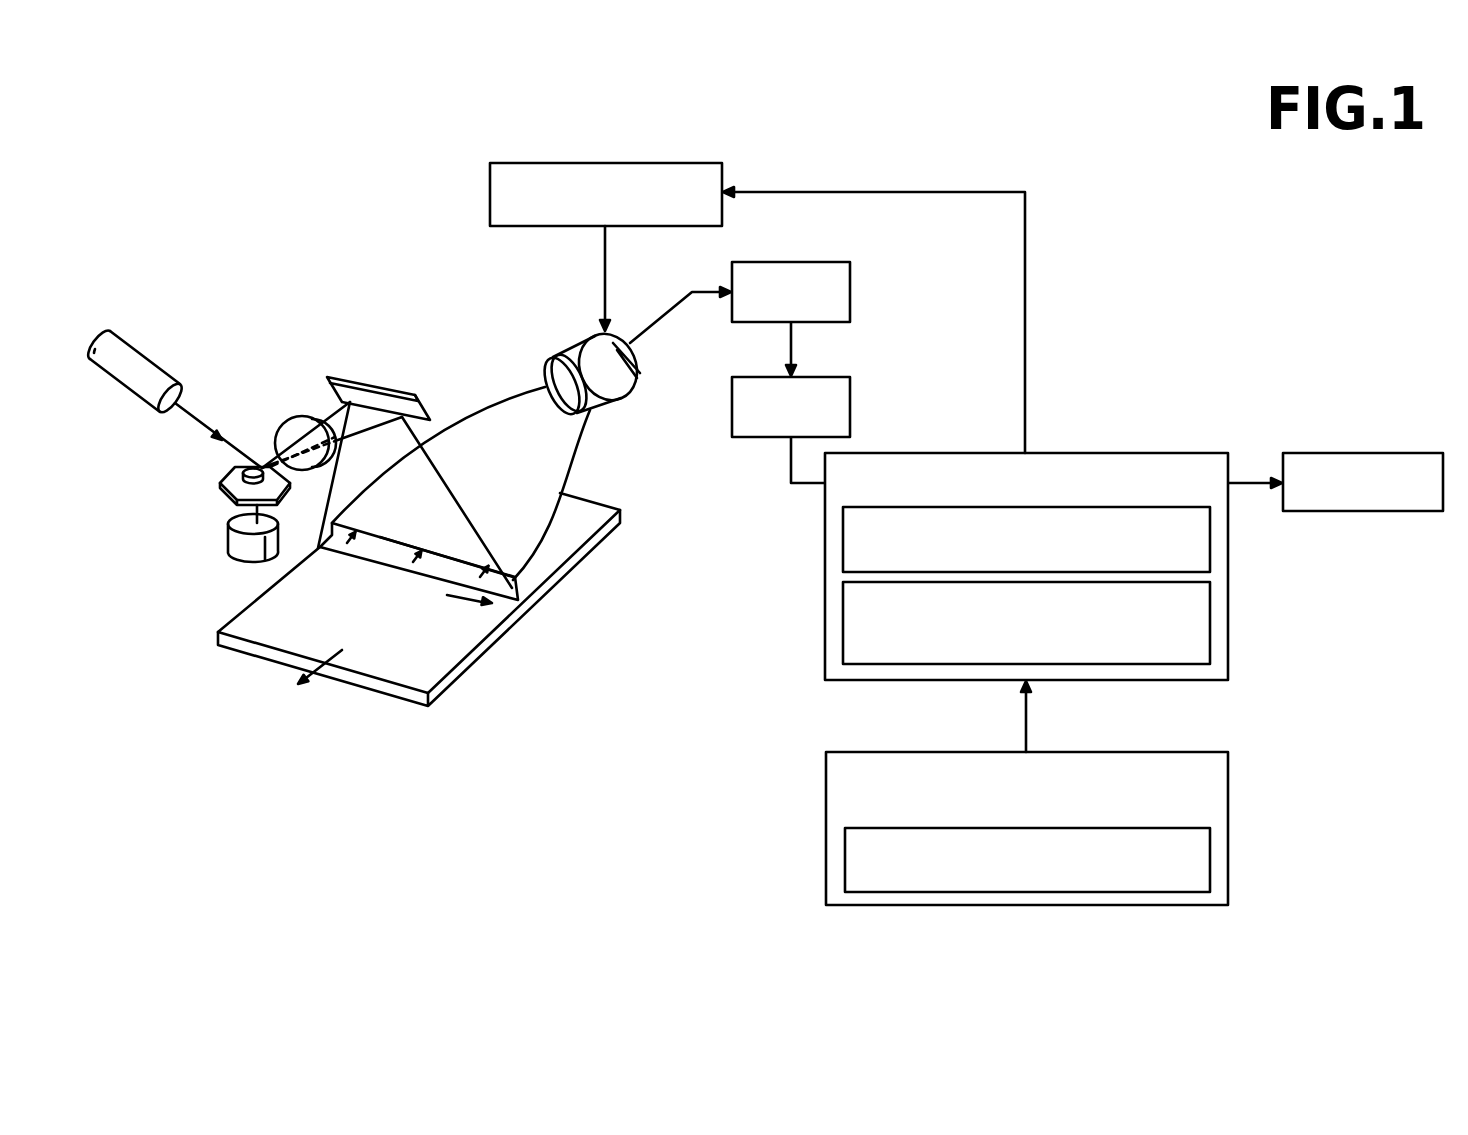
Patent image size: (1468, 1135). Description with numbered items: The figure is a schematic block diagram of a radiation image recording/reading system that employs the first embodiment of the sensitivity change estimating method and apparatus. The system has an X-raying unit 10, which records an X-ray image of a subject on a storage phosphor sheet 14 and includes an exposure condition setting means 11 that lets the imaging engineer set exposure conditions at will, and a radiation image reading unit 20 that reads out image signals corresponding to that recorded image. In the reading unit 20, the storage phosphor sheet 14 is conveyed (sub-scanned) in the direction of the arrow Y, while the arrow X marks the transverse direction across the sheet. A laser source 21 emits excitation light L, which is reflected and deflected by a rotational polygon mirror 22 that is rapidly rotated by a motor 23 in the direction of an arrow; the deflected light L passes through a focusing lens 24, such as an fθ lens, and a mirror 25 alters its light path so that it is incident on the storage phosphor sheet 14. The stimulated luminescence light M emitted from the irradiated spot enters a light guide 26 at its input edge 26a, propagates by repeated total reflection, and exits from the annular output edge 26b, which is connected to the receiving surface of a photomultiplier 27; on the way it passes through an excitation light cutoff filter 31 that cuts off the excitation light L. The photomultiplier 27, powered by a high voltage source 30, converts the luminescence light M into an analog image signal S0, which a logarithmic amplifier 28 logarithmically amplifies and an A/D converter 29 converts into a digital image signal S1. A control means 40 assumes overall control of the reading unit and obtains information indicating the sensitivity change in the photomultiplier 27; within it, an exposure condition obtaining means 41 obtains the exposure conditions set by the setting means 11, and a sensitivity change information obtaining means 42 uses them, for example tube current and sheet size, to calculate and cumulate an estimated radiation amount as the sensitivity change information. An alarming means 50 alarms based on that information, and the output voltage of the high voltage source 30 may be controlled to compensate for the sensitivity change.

The X-raying unit 10 is at (1053, 793).
The exposure condition setting means 11 is at (1211, 853).
The storage phosphor sheet 14 is at (445, 666).
The radiation image reading unit 20 is at (340, 318).
The laser source 21 is at (140, 368).
The rotational polygon mirror 22 is at (222, 474).
The motor 23 is at (229, 540).
The focusing lens 24 is at (293, 417).
The mirror 25 is at (407, 392).
The light guide 26 is at (477, 413).
The input edge 26a is at (520, 608).
The annular output edge 26b is at (574, 430).
The photomultiplier 27 is at (577, 348).
The logarithmic amplifier 28 is at (851, 269).
The A/D converter 29 is at (851, 384).
The high voltage source 30 is at (714, 163).
The excitation light cutoff filter 31 is at (546, 375).
The control means 40 is at (1053, 545).
The exposure condition obtaining means 41 is at (1211, 538).
The sensitivity change information obtaining means 42 is at (1211, 650).
The alarming means 50 is at (1428, 453).
The excitation light L is at (204, 421).
The stimulated luminescence light M is at (340, 555).
The X direction X is at (469, 609).
The sub-scanning direction arrow Y is at (310, 676).
The analog image signal S0 is at (699, 291).
The digital image signal S1 is at (790, 461).